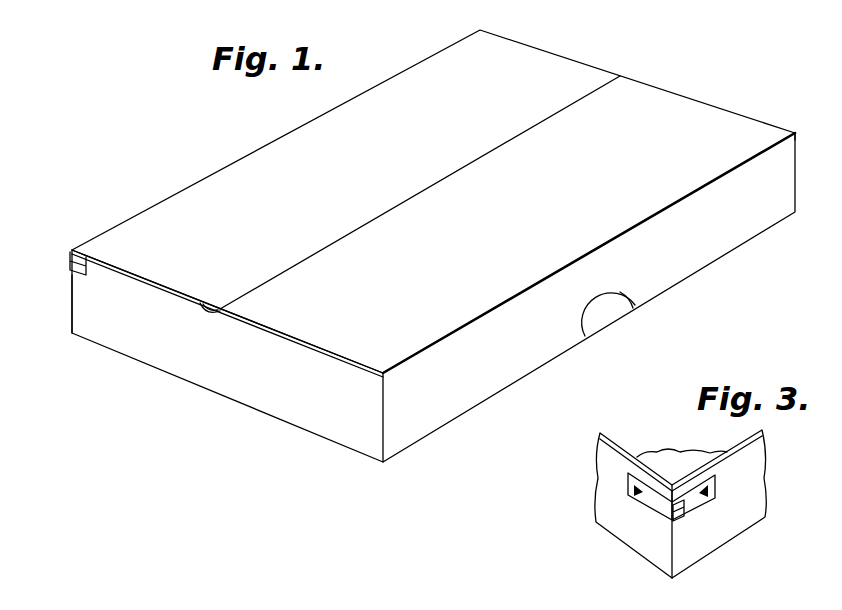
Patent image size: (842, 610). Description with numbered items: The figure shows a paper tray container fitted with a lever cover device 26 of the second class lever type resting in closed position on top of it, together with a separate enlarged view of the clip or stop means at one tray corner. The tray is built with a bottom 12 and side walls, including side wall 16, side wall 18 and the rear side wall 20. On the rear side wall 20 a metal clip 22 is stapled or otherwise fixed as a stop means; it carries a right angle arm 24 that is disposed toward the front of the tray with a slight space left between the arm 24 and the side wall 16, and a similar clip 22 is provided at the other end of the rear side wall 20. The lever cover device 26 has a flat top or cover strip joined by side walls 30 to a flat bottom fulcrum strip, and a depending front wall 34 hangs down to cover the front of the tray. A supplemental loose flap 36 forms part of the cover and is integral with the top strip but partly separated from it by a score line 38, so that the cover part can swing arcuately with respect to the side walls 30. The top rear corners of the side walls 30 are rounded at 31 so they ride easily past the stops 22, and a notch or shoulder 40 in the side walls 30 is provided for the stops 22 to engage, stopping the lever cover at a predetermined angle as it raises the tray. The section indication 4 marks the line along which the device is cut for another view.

In FIG. 1, the section line 4- 4 is at (250, 120).
In FIG. 3, the bottom 12 is at (676, 461).
In FIG. 3, the side wall 16 is at (753, 462).
In FIG. 1, the side wall 18 is at (606, 316).
In FIG. 3, the rear side wall 20 is at (615, 455).
In FIG. 1, the metal clip 22 is at (68, 265).
In FIG. 3, the metal clip 22 is at (653, 520).
In FIG. 1, the right angle arm 24 is at (80, 251).
In FIG. 3, the right angle arm 24 is at (682, 514).
In FIG. 1, the lever cover device 26 is at (773, 126).
In FIG. 1, the side walls of the lever cover device 30 is at (258, 397).
In FIG. 1, the rounded top rear corners 31 is at (72, 280).
In FIG. 1, the depending front wall 34 is at (700, 250).
In FIG. 1, the supplemental flap 36 is at (512, 52).
In FIG. 1, the score line 38 is at (392, 200).
In FIG. 1, the notch 40 is at (202, 309).